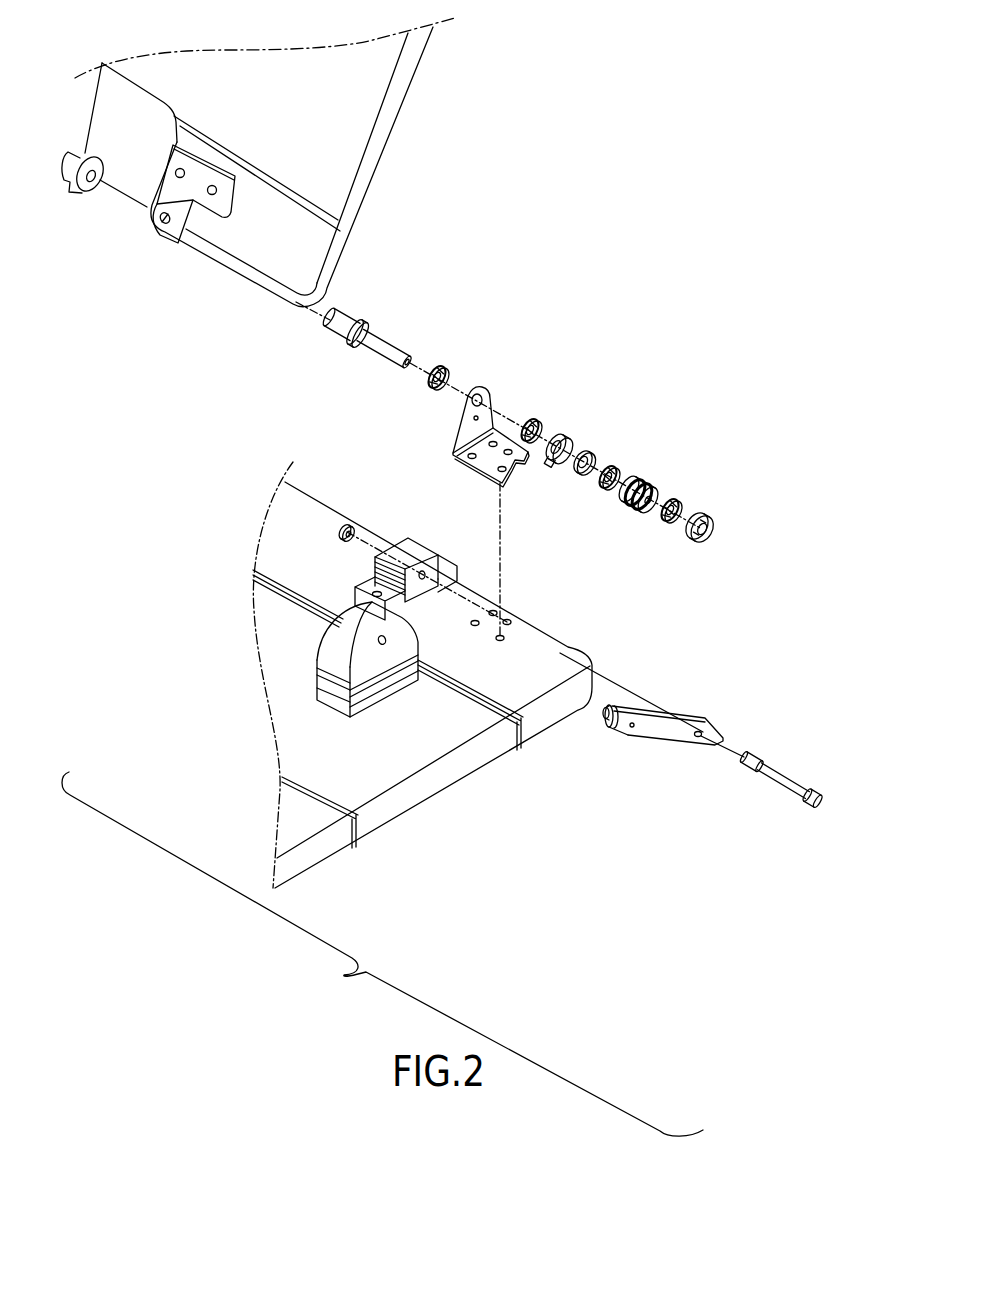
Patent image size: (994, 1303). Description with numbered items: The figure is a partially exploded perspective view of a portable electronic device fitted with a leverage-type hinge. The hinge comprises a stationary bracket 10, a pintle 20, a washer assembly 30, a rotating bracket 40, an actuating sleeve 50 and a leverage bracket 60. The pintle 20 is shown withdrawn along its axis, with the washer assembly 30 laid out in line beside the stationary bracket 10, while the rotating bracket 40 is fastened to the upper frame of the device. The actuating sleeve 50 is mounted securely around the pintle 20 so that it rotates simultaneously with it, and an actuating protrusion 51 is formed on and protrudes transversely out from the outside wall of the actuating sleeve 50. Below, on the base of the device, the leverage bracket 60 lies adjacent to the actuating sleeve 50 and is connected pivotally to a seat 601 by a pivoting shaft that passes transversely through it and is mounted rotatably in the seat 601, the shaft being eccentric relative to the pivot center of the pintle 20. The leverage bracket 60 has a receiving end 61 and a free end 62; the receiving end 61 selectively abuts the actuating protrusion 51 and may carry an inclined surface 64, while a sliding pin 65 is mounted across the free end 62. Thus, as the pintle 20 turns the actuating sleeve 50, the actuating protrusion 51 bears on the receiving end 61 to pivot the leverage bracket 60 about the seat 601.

The stationary bracket 10 is at (513, 473).
The pintle 20 is at (370, 320).
The washer assembly 30 is at (517, 397).
The rotating bracket 40 is at (213, 173).
The actuating sleeve 50 is at (103, 63).
The actuating protrusion 51 is at (72, 199).
The leverage bracket 60 is at (668, 737).
The seat 601 is at (403, 537).
The receiving end 61 is at (702, 735).
The free end 62 is at (608, 706).
The inclined surface 64 is at (717, 727).
The sliding pin 65 is at (617, 730).